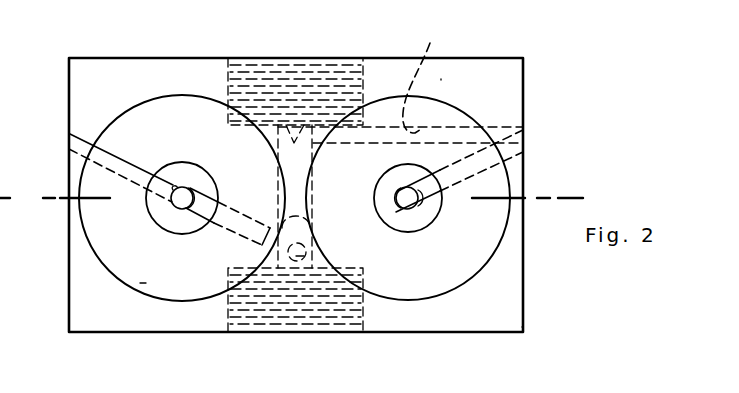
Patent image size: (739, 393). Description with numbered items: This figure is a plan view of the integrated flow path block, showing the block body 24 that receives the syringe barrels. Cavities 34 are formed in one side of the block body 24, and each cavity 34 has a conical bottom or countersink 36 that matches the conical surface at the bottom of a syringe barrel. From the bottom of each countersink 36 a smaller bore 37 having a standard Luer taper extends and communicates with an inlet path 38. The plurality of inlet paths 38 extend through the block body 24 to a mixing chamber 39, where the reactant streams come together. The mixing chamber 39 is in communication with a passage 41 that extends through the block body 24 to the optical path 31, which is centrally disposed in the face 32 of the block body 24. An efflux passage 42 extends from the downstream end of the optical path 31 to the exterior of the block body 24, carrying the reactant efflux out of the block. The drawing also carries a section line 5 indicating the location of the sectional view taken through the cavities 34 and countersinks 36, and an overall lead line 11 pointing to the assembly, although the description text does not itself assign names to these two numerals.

The section line 5- 5 is at (7, 198).
The housing 11 is at (486, 57).
The block body 24 is at (441, 80).
The optical path 31 is at (285, 145).
The face 32 is at (371, 334).
The cavities 34 is at (104, 249).
The countersink 36 is at (140, 283).
The bore 37 is at (135, 160).
The inlet path 38 is at (172, 204).
The mixing chamber 39 is at (292, 272).
The passage 41 is at (308, 252).
The efflux passage 42 is at (415, 81).